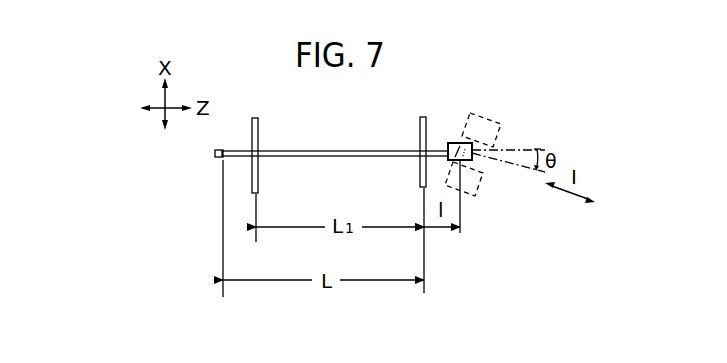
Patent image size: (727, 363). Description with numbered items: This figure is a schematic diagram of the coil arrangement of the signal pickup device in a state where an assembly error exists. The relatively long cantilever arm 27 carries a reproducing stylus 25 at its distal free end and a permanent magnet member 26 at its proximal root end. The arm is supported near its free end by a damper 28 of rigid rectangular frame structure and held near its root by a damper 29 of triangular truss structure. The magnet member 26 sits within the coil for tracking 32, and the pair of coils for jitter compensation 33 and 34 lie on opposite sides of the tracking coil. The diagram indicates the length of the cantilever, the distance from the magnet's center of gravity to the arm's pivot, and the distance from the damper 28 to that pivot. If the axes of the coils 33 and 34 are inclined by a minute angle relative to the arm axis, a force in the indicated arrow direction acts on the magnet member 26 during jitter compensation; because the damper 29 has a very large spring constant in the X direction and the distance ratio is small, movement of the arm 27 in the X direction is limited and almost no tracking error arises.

The reproducing stylus 25 is at (215, 155).
The permanent magnet member 26 is at (455, 143).
The cantilever arm 27 is at (343, 150).
The damper 28 is at (258, 117).
The damper 29 is at (424, 116).
The coil for tracking 32 is at (485, 163).
The coil for jitter compensation 33 is at (479, 184).
The coil for jitter compensation 34 is at (499, 121).